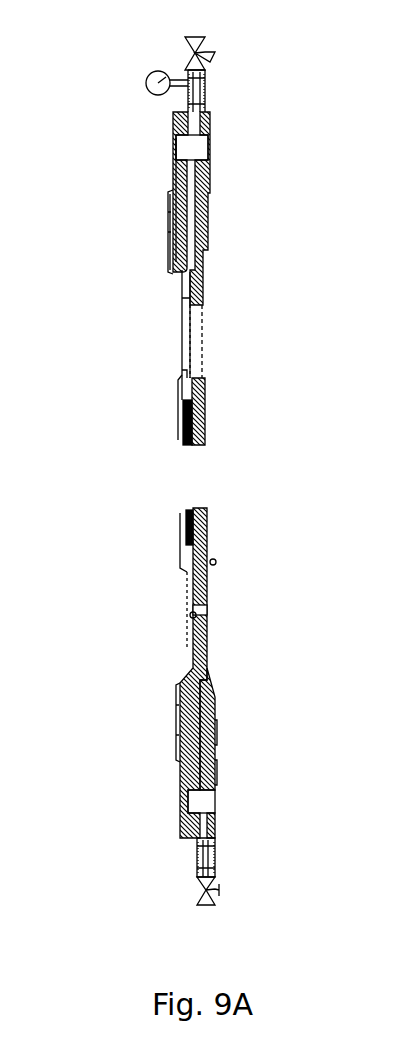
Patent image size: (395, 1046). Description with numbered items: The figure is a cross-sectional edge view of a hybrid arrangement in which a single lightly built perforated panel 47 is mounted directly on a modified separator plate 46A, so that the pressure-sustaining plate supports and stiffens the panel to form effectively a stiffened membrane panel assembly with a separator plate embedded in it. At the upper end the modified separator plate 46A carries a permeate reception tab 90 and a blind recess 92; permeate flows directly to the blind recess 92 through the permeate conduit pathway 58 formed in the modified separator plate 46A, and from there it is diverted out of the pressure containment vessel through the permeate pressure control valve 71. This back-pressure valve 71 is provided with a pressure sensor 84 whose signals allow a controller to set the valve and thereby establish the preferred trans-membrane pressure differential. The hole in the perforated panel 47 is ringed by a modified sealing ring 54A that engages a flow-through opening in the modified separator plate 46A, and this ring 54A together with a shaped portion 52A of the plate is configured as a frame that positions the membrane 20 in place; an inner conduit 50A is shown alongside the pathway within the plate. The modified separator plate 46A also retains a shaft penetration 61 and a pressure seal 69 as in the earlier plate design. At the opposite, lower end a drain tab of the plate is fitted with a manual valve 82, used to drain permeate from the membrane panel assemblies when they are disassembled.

The permeate pressure control valve 71 is at (200, 43).
The pressure sensor 84 is at (147, 80).
The permeate reception tab 90 is at (208, 143).
The blind recess 92 is at (197, 148).
The membrane 20 is at (170, 228).
The shaped portion 52A is at (176, 252).
The permeate conduit pathway 58 is at (178, 278).
The modified sealing ring 54A is at (180, 370).
The inner conduit 50A is at (202, 345).
The perforated panel 47 is at (182, 408).
The modified separator plate 46A is at (217, 562).
The shaft penetration 61 is at (190, 613).
The pressure seal 69 is at (205, 610).
The manual valve 82 is at (205, 893).